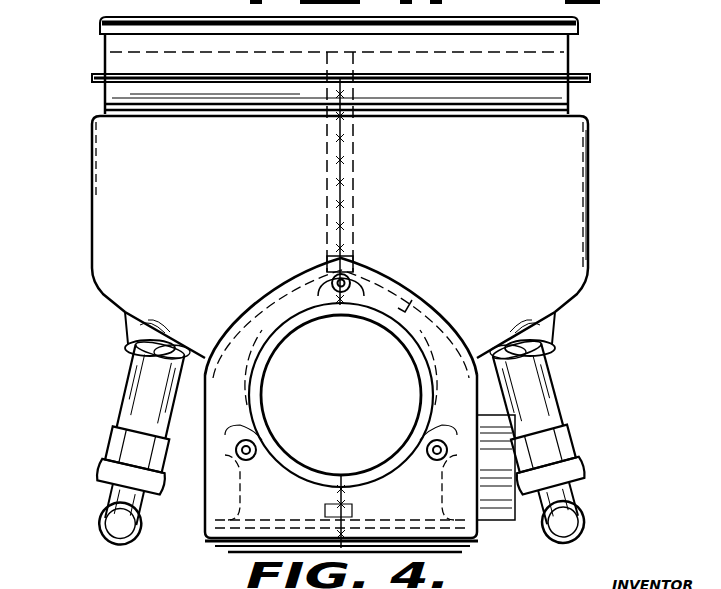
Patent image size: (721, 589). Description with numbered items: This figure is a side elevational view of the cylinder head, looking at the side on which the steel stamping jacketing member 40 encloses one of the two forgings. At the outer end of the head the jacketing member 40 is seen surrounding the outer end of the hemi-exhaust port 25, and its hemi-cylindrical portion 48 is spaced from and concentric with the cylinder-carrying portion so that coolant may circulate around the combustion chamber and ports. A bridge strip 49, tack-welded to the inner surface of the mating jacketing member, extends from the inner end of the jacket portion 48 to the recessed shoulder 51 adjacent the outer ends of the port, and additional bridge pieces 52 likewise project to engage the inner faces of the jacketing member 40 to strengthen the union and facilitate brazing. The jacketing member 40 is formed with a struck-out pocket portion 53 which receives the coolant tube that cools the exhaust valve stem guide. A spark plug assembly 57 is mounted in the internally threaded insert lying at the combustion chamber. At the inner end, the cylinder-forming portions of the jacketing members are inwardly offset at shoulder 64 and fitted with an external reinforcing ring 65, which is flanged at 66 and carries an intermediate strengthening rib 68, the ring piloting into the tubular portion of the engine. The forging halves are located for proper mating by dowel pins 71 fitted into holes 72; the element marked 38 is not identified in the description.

The hemi-exhaust port 25 is at (387, 454).
The casing body 38 is at (90, 240).
The coolant jacketing member 40 is at (590, 192).
The hemi-cylindrical portion 48 is at (96, 188).
The bridge strip 49 is at (357, 206).
The shoulder 51 is at (413, 300).
The bridge piece 52 is at (315, 524).
The struck-out pocket portion 53 is at (513, 497).
The spark plug assembly 57 is at (140, 394).
The shoulder 64 is at (98, 113).
The external reinforcing ring 65 is at (572, 50).
The flange 66 is at (588, 77).
The intermediate strengthening rib 68 is at (573, 31).
The dowel pin 71 is at (350, 510).
The hole 72 is at (236, 452).